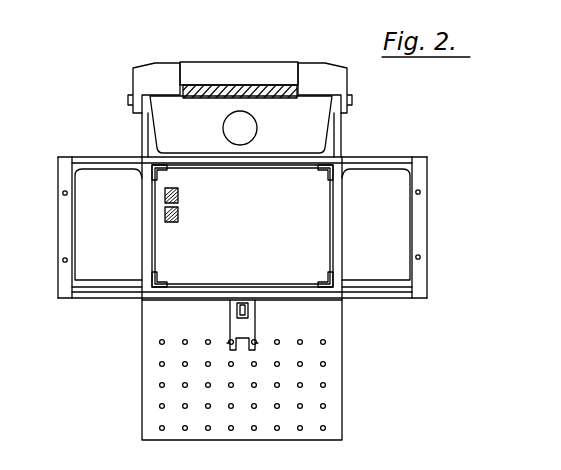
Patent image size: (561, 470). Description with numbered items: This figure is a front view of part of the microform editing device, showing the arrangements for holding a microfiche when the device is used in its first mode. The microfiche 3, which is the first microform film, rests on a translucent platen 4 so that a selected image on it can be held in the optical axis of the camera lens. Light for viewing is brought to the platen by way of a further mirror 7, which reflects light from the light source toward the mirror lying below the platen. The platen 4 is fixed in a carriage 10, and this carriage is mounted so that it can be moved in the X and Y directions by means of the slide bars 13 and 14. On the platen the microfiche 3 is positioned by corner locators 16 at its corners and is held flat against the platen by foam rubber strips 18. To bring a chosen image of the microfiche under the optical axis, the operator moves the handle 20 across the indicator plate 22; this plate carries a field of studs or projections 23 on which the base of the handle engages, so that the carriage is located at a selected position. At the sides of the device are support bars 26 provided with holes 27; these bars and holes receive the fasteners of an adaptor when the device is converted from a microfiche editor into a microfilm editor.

The microfiche 3 is at (252, 234).
The translucent platen 4 is at (330, 211).
The further mirror 7 is at (257, 130).
The carriage 10 is at (331, 289).
The slide bars 13 is at (93, 160).
The slide bars 14 is at (141, 137).
The corner locators 16 is at (152, 280).
The foam rubber strips 18 is at (207, 98).
The handle 20 is at (247, 315).
The indicator plate 22 is at (333, 413).
The studs or projections 23 is at (160, 428).
The support bars 26 is at (68, 233).
The holes 27 is at (64, 258).